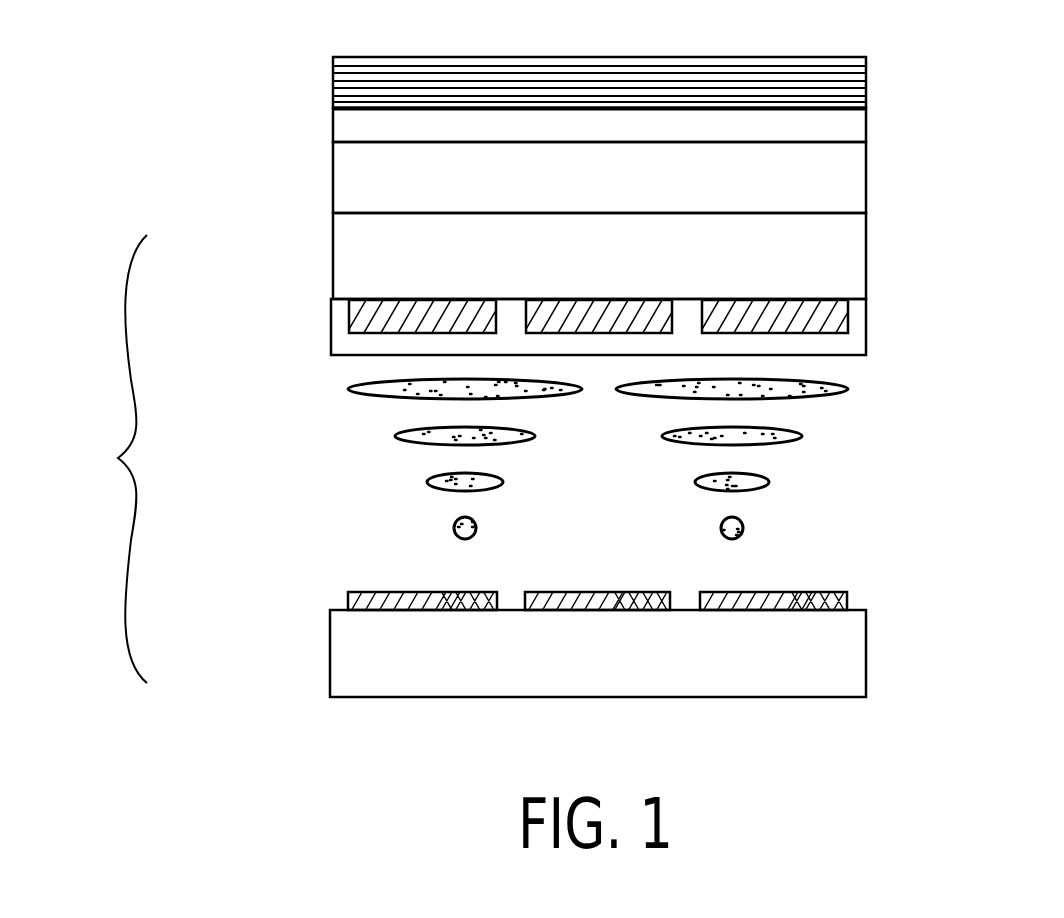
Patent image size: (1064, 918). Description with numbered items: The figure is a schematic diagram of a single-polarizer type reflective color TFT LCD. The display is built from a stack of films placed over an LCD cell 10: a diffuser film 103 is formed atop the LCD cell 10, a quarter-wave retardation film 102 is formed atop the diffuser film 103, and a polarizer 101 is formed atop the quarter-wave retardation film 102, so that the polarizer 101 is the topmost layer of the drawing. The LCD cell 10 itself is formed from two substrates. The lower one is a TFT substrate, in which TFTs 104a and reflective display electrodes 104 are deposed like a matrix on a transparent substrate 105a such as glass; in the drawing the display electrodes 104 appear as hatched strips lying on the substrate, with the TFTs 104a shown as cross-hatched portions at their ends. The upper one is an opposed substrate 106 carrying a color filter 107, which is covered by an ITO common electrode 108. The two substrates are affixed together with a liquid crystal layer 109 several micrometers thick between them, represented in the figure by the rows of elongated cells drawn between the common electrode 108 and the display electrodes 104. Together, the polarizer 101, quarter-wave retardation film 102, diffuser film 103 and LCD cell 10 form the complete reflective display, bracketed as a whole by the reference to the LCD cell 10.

The LCD cell 10 is at (104, 459).
The polarizer 101 is at (866, 87).
The quarter-wave retardation film 102 is at (866, 128).
The diffuser film 103 is at (866, 190).
The display electrode 104 is at (373, 592).
The TFT 104a is at (823, 592).
The lower substrate 105a is at (330, 658).
The opposed substrate 106 is at (333, 247).
The color filter 107 is at (848, 318).
The ITO common electrode 108 is at (866, 338).
The liquid crystal layer 109 is at (795, 487).